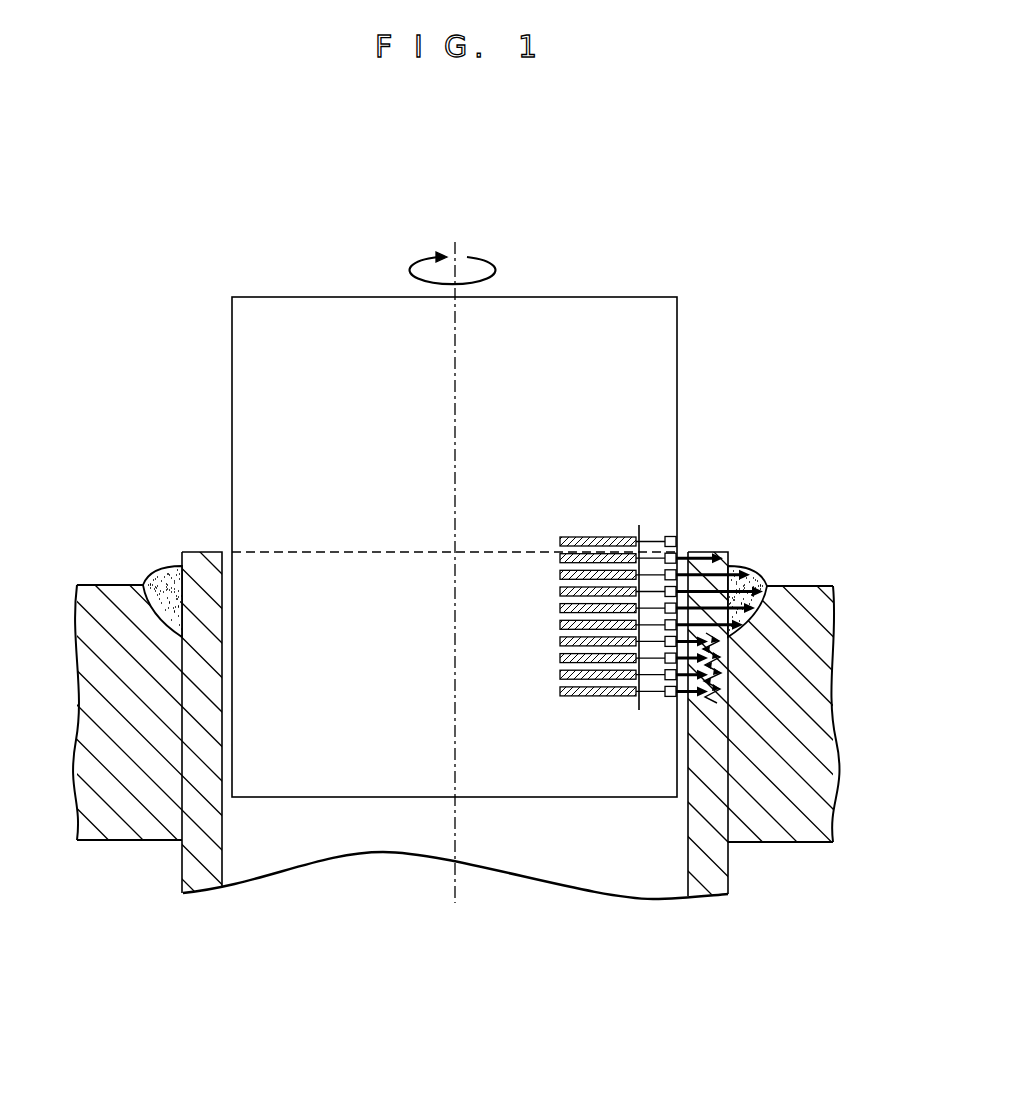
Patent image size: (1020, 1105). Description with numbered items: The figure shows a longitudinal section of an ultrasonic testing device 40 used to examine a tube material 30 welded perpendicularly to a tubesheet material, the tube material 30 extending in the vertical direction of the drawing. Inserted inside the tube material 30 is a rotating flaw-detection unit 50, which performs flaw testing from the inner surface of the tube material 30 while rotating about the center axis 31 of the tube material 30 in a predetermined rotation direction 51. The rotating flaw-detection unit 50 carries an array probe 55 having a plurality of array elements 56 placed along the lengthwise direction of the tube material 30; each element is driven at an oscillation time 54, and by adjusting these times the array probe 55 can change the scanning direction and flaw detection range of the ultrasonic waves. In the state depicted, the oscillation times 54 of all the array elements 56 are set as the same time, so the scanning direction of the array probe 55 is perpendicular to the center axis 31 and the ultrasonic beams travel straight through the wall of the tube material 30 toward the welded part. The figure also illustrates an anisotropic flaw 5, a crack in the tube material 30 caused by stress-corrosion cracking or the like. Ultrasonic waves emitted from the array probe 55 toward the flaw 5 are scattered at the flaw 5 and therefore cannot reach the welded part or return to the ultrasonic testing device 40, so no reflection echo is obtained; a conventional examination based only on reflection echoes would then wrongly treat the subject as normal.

The flaw 5 is at (706, 698).
The tube material 30 is at (736, 543).
The center axis 31 is at (452, 245).
The ultrasonic testing device 40 is at (800, 216).
The rotating flaw-detection unit 50 is at (246, 295).
The rotation direction 51 is at (483, 256).
The oscillation time 54 is at (560, 522).
The array probe 55 is at (647, 702).
The array elements 56 is at (647, 702).